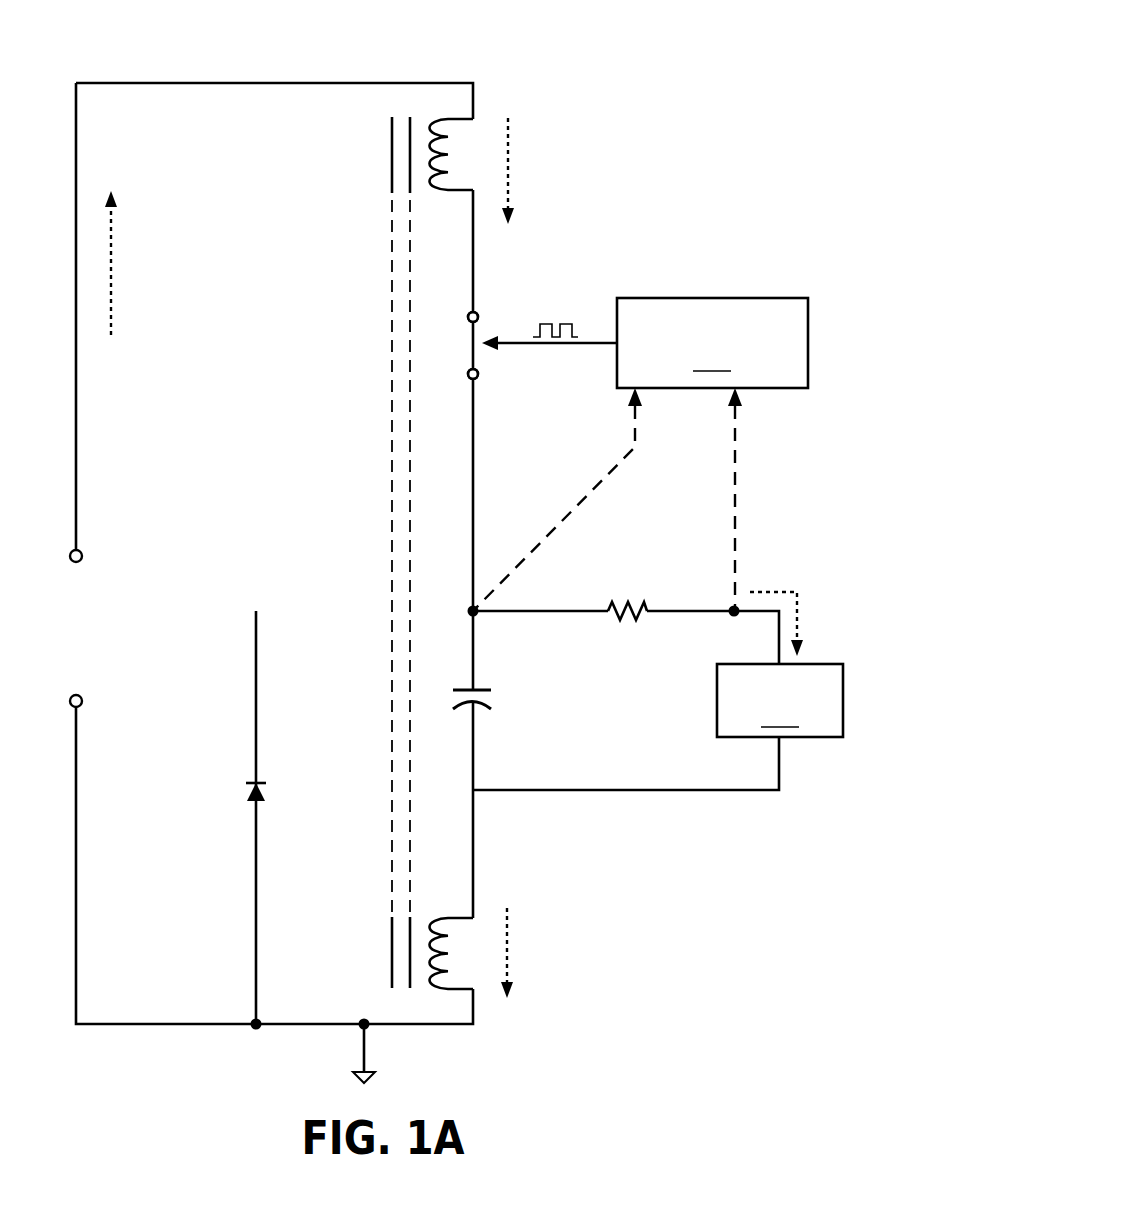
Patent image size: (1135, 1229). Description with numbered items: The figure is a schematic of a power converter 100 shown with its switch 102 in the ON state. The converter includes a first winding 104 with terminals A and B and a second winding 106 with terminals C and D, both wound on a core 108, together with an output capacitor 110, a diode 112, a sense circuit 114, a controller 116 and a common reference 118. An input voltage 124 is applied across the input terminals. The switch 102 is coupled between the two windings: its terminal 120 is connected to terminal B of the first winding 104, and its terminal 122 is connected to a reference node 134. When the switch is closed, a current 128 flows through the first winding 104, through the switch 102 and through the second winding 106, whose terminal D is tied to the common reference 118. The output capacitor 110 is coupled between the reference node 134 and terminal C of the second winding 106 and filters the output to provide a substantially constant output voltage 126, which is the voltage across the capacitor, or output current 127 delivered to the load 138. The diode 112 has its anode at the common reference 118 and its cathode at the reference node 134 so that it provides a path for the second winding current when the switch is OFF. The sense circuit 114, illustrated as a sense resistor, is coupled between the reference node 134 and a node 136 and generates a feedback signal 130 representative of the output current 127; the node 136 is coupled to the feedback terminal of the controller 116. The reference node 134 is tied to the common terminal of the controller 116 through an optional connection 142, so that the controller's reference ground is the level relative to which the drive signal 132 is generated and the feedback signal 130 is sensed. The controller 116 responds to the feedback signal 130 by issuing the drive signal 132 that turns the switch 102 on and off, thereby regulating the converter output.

The power converter 100 is at (724, 76).
The switch S1 102 is at (458, 323).
The first winding 104 is at (482, 126).
The second winding 106 is at (482, 930).
The core 108 is at (384, 149).
The output capacitor CO 110 is at (438, 700).
The diode D1 112 is at (221, 783).
The sense circuit 114 is at (625, 596).
The controller 116 is at (712, 360).
The common reference 118 is at (372, 1054).
The terminal 120 is at (484, 304).
The terminal 122 is at (467, 385).
The input voltage VIN 124 is at (103, 622).
The output voltage VO 126 is at (548, 712).
The output current IO 127 is at (840, 600).
The current ION 128 is at (163, 254).
The feedback signal 130 is at (742, 518).
The drive signal 132 is at (562, 319).
The reference node 134 is at (465, 598).
The node 136 is at (706, 624).
The load 138 is at (780, 700).
The optional connection 142 is at (584, 490).